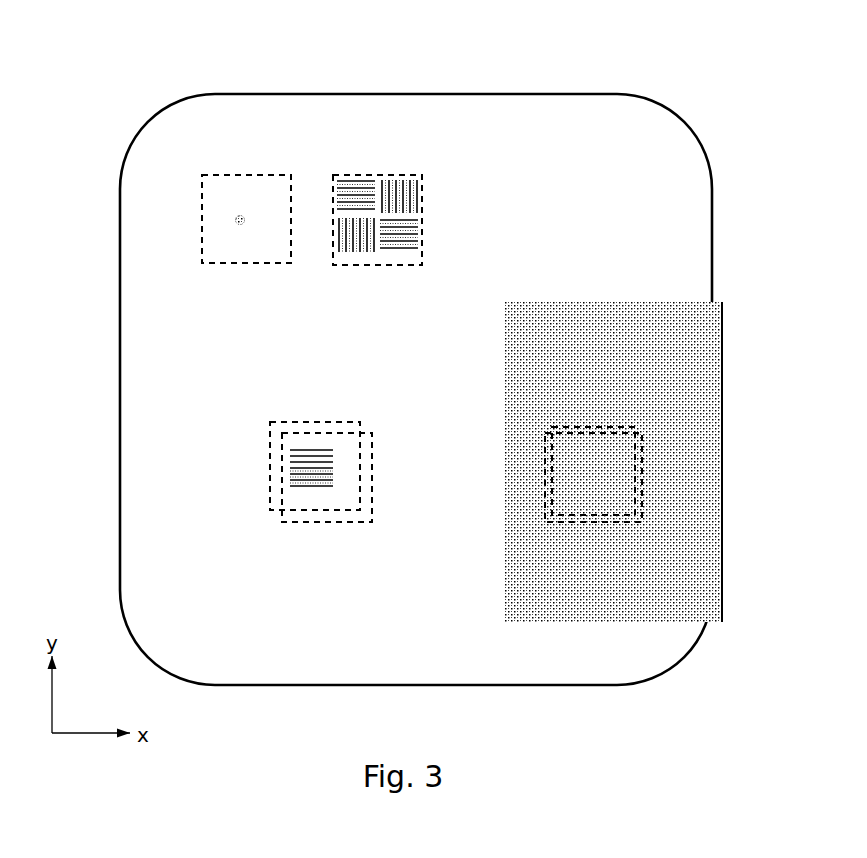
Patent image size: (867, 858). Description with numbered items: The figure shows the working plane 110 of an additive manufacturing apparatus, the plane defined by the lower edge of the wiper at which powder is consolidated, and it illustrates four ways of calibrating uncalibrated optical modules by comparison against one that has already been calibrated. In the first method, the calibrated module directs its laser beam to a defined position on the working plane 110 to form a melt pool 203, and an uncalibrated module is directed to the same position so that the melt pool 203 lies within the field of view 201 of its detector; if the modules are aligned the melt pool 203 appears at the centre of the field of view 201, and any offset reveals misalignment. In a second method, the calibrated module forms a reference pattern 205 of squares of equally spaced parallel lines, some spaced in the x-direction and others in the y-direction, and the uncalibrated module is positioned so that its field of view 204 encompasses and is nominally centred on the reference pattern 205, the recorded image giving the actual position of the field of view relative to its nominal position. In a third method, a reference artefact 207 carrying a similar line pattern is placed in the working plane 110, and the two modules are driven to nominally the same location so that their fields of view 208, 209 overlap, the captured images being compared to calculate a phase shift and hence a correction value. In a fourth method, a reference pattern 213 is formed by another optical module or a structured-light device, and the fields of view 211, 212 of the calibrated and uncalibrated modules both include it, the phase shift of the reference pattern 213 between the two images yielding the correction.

The working plane 110 is at (611, 96).
The field of view 201 is at (222, 176).
The melt pool 203 is at (234, 220).
The field of view 204 is at (385, 173).
The reference pattern 205 is at (401, 214).
The reference artefact 207 is at (623, 318).
The field of view 208 is at (550, 427).
The field of view 209 is at (553, 523).
The field of view 211 is at (278, 425).
The field of view 212 is at (285, 468).
The reference pattern 213 is at (318, 450).